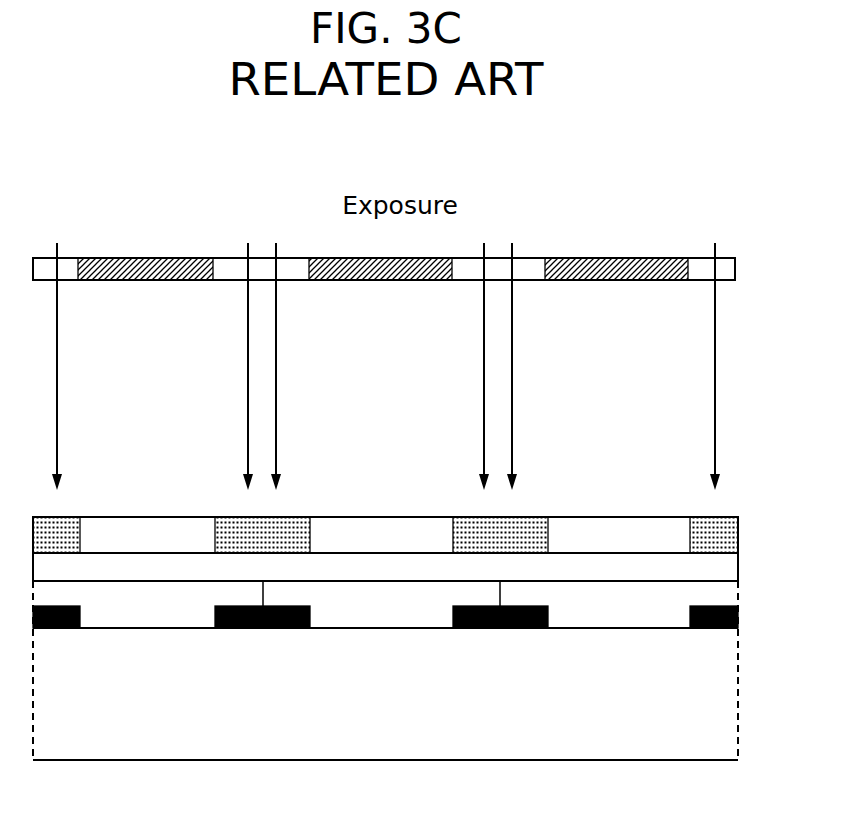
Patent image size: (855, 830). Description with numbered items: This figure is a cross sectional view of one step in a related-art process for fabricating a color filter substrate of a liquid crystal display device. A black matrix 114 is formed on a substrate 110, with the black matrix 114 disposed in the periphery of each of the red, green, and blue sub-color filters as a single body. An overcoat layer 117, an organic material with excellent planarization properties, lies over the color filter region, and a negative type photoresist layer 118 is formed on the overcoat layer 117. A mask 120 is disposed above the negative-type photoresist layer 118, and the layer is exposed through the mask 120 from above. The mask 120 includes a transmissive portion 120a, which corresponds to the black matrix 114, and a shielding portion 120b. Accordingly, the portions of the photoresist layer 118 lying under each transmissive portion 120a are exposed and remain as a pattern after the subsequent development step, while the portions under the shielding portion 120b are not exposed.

The substrate 110 is at (368, 704).
The black matrix 114 is at (52, 630).
The overcoat layer 117 is at (728, 566).
The negative type photoresist layer 118 is at (739, 535).
The mask 120 is at (418, 223).
The transmissive portion 120a is at (499, 264).
The shielding portion 120b is at (617, 258).